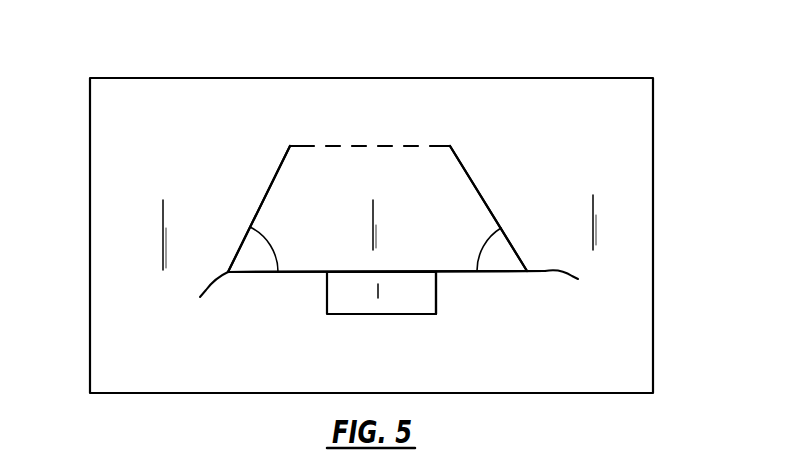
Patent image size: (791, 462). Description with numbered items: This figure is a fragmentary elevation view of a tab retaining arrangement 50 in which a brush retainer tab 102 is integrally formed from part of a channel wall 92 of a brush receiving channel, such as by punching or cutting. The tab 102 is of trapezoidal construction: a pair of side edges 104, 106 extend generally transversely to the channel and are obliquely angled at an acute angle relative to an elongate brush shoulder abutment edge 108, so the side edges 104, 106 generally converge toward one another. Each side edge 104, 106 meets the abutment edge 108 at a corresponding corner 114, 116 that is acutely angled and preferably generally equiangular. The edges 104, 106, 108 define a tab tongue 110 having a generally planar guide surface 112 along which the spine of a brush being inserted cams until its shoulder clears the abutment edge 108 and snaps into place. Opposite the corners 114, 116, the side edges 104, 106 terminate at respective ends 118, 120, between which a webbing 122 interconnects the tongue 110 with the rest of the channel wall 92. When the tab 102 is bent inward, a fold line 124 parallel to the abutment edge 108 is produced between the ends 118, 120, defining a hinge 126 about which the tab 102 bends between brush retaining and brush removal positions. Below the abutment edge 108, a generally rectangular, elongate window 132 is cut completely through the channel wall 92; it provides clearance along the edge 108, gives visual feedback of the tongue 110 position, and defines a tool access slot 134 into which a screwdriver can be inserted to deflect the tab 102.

The component 50 is at (158, 279).
The channel wall 92 is at (653, 132).
The brush retainer tab 102 is at (507, 156).
The side edge 104 is at (263, 197).
The side edge 106 is at (483, 198).
The brush shoulder abutment edge 108 is at (268, 273).
The tab tongue 110 is at (313, 263).
The guide surface 112 is at (429, 203).
The corner 114 is at (200, 297).
The corner 116 is at (580, 282).
The side edge end 118 is at (290, 146).
The side edge end 120 is at (450, 146).
The webbing 122 is at (419, 134).
The fold line 124 is at (342, 143).
The hinge 126 is at (308, 138).
The window 132 is at (380, 315).
The tool access slot 134 is at (421, 306).